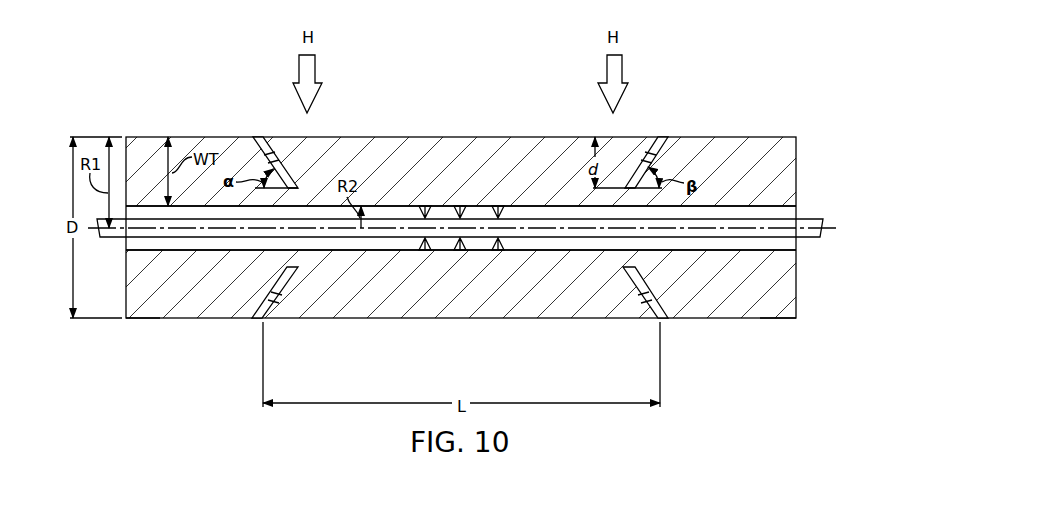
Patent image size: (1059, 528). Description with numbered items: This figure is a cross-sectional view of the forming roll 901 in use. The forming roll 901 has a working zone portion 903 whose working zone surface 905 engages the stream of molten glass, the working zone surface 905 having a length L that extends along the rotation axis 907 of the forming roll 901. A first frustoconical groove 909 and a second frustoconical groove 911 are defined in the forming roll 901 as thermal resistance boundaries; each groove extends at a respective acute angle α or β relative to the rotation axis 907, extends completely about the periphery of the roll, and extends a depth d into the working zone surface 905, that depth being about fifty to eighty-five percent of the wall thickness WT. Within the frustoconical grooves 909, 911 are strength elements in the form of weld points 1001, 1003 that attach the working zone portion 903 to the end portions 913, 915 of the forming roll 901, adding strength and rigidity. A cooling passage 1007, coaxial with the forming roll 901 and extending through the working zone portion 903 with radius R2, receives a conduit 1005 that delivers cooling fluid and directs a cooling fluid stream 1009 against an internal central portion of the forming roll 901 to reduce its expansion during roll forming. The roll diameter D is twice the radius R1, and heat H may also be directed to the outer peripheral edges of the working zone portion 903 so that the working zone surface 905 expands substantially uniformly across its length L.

The forming roll 901 is at (132, 122).
The working zone portion 903 is at (402, 122).
The working zone surface 905 is at (485, 323).
The rotation axis 907 is at (833, 227).
The first frustoconical groove 909 is at (255, 325).
The second frustoconical groove 911 is at (667, 324).
The end portion 913 is at (145, 318).
The end portion 915 is at (775, 318).
The weld point 1001 is at (277, 158).
The weld point 1003 is at (644, 162).
The conduit 1005 is at (765, 238).
The cooling passage 1007 is at (119, 247).
The cooling fluid stream 1009 is at (498, 250).